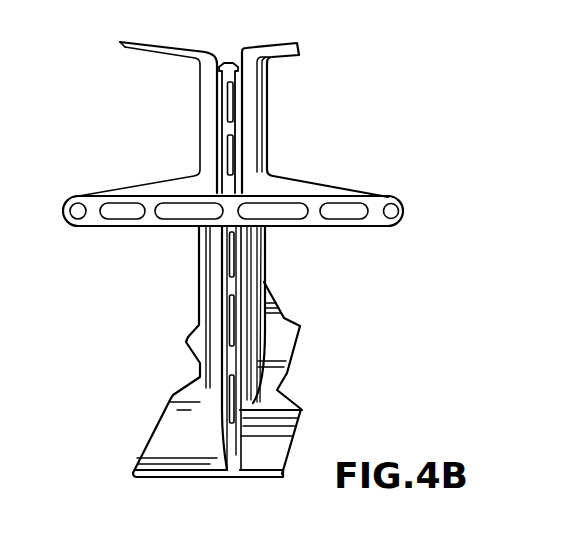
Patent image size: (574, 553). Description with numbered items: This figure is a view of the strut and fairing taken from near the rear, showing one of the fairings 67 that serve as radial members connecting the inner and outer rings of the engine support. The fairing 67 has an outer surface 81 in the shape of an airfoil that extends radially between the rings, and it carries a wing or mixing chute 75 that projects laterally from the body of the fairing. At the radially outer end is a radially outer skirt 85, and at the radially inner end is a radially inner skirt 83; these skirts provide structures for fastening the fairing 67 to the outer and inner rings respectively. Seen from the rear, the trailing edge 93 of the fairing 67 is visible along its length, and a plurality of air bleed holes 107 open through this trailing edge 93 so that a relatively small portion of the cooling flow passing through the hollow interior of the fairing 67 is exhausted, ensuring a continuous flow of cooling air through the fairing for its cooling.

The fairing 67 is at (198, 110).
The radially outer skirt 85 is at (300, 55).
The trailing edge 93 is at (240, 147).
The air bleed holes 107 is at (234, 105).
The mixing chute 75 is at (340, 185).
The outer surface 81 is at (198, 274).
The radially inner skirt 83 is at (285, 333).